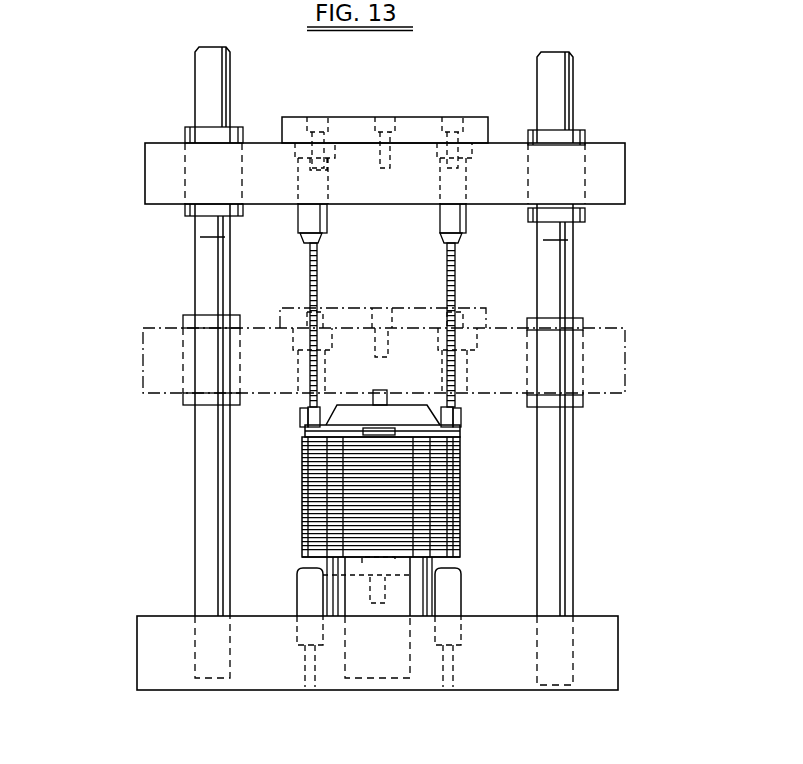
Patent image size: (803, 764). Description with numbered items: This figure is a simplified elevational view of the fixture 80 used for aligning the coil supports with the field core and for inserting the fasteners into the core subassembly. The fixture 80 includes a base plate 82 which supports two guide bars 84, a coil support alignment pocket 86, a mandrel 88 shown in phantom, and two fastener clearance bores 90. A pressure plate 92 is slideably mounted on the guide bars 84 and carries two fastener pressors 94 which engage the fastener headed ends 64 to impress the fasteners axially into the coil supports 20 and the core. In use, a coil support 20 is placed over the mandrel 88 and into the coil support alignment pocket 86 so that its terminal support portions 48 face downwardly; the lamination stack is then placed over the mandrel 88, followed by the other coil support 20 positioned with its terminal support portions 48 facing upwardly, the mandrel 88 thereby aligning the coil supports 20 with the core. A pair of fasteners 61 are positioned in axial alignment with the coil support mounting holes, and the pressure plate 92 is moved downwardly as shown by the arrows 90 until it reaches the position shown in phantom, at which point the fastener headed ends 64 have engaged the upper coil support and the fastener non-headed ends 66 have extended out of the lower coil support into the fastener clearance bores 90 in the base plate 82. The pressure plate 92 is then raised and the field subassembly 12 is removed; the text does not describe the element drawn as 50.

The field subassembly 12 is at (462, 497).
The coil support 20 is at (305, 433).
The terminal support portion 48 is at (303, 426).
The separator plate 50 is at (300, 443).
The fastener 61 is at (322, 288).
The fastener headed end 64 is at (308, 242).
The fastener non-headed end 66 is at (308, 400).
The fixture 80 is at (645, 135).
The base plate 82 is at (137, 665).
The guide bar 84 is at (197, 547).
The coil support alignment pocket 86 is at (460, 580).
The mandrel 88 is at (343, 483).
The fastener clearance bore 90 is at (118, 372).
The pressure plate 92 is at (165, 143).
The fastener pressor 94 is at (327, 216).